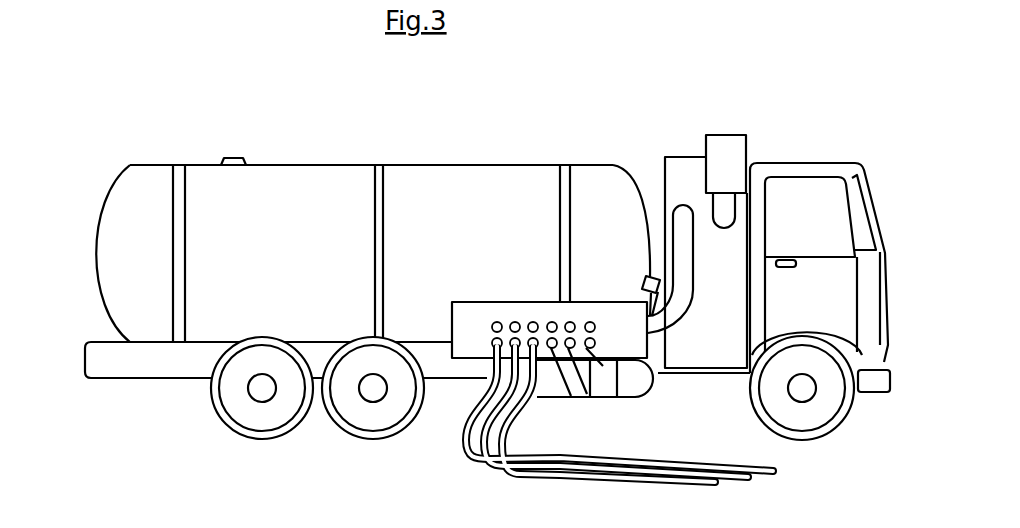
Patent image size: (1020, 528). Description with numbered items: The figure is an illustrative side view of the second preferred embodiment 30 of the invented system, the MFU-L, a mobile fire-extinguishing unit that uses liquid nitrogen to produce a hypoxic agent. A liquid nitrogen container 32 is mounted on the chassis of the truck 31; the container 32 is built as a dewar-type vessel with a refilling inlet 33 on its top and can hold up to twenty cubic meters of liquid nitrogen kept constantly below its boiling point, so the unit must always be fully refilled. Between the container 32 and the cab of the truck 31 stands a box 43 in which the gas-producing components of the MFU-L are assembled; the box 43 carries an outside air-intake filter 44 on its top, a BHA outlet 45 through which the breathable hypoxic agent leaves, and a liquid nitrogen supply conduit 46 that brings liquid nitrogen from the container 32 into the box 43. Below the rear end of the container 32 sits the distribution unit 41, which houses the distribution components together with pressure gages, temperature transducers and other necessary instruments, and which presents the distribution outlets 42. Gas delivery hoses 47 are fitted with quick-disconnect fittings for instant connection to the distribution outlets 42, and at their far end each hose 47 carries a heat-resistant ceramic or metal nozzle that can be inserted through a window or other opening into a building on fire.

The second preferred embodiment 30 is at (528, 90).
The truck 31 is at (812, 155).
The liquid nitrogen container 32 is at (373, 253).
The refilling inlet 33 is at (238, 157).
The distribution unit 41 is at (525, 312).
The distribution outlets 42 is at (595, 395).
The box 43 is at (706, 262).
The outside air-intake filter 44 is at (725, 135).
The BHA outlet 45 is at (683, 222).
The liquid nitrogen supply conduit 46 is at (647, 280).
The gas delivery hoses 47 is at (553, 479).